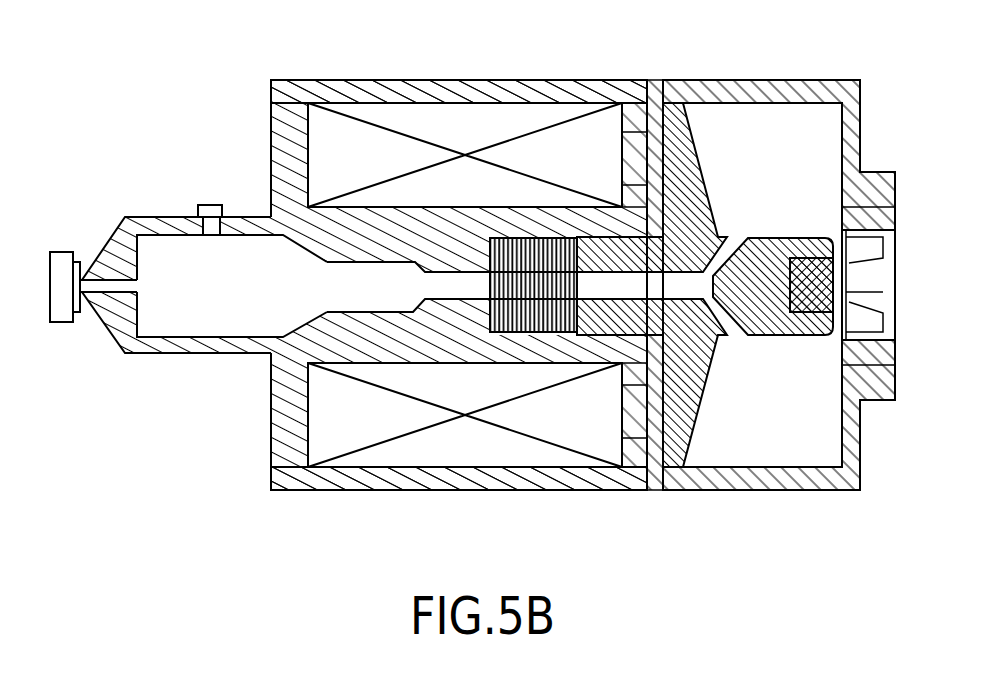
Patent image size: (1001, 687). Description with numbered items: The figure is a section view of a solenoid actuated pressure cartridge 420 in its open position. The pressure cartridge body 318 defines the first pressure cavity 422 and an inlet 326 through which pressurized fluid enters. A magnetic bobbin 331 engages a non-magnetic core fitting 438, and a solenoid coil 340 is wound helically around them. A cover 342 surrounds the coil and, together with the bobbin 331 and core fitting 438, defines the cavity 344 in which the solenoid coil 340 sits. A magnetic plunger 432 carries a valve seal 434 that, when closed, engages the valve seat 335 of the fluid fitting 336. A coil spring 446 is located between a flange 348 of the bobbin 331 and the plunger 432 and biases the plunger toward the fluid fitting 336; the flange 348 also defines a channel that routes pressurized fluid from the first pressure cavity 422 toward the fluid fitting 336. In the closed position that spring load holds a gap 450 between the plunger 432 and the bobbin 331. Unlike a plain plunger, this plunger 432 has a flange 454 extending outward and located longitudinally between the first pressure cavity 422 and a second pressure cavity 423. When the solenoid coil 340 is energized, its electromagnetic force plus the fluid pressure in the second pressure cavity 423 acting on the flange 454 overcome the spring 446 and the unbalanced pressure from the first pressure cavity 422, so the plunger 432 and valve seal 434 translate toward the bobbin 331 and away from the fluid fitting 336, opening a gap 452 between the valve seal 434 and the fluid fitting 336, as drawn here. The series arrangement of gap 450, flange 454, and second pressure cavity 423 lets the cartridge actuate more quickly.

The pressure cartridge 420 is at (172, 100).
The pressure cartridge body 318 is at (173, 215).
The inlet 326 is at (88, 276).
The bobbin 331 is at (375, 237).
The cover 342 is at (377, 96).
The solenoid coil 340 is at (512, 470).
The cavity 344 is at (377, 460).
The core fitting 438 is at (620, 160).
The first pressure cavity 422 is at (231, 301).
The flange 348 is at (472, 292).
The spring 446 is at (535, 333).
The gap 450 is at (650, 204).
The flange 454 is at (692, 137).
The plunger 432 is at (692, 282).
The second pressure cavity 423 is at (779, 219).
The gap 452 is at (838, 318).
The valve seal 434 is at (813, 252).
The valve seat 335 is at (846, 291).
The fluid fitting 336 is at (861, 372).